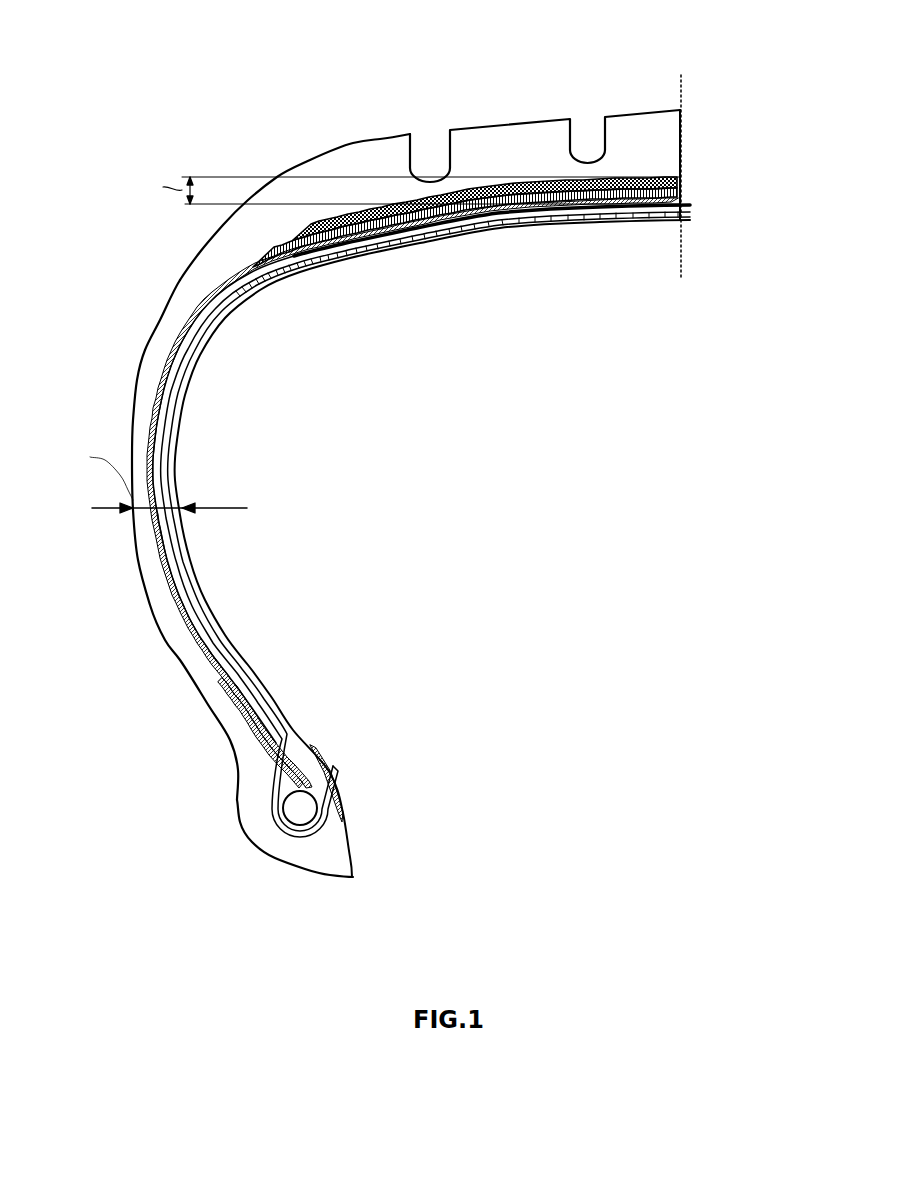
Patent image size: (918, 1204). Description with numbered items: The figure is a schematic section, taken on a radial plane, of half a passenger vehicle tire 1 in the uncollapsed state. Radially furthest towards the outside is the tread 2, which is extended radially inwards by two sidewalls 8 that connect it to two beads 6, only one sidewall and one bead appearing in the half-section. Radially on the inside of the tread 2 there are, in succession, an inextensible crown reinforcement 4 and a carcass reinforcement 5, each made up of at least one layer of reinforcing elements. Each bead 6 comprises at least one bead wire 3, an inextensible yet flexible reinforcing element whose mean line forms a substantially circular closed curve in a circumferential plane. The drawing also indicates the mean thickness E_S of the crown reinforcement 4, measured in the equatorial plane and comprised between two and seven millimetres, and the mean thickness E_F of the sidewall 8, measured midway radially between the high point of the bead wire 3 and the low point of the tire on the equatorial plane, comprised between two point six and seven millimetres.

The tire 1 is at (233, 112).
The tread 2 is at (502, 145).
The bead wire 3 is at (305, 820).
The crown reinforcement 4 is at (703, 201).
The carcass reinforcement 5 is at (173, 347).
The bead 6 is at (258, 822).
The sidewall 8 is at (160, 578).